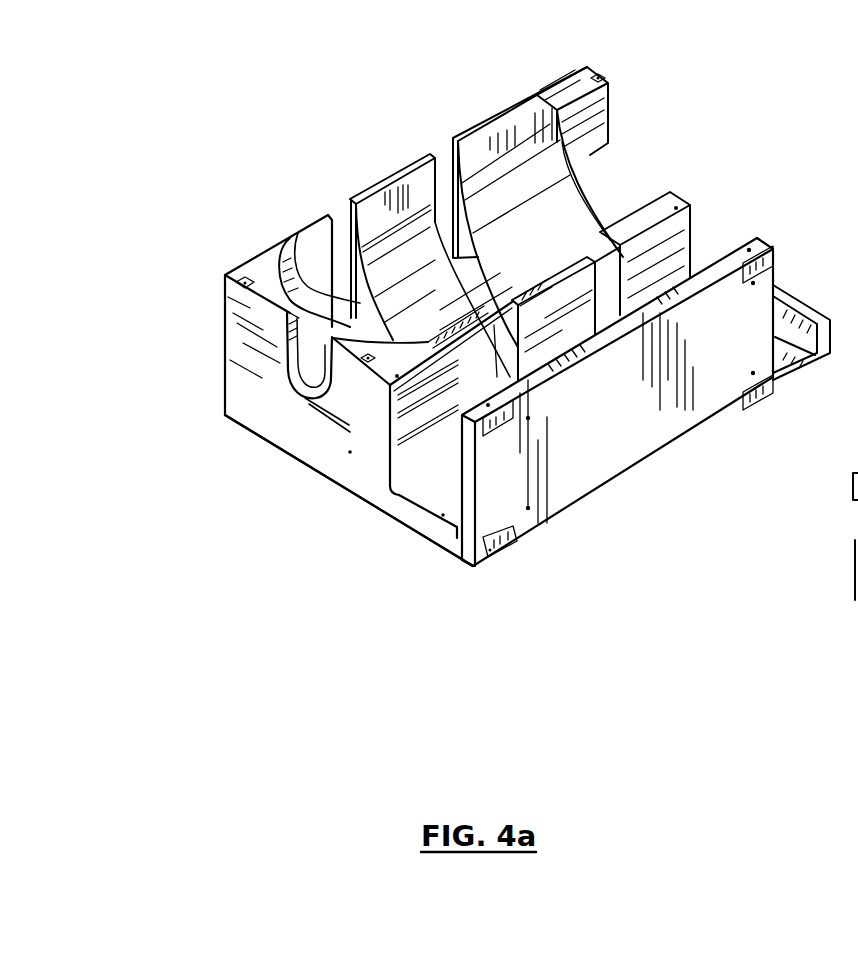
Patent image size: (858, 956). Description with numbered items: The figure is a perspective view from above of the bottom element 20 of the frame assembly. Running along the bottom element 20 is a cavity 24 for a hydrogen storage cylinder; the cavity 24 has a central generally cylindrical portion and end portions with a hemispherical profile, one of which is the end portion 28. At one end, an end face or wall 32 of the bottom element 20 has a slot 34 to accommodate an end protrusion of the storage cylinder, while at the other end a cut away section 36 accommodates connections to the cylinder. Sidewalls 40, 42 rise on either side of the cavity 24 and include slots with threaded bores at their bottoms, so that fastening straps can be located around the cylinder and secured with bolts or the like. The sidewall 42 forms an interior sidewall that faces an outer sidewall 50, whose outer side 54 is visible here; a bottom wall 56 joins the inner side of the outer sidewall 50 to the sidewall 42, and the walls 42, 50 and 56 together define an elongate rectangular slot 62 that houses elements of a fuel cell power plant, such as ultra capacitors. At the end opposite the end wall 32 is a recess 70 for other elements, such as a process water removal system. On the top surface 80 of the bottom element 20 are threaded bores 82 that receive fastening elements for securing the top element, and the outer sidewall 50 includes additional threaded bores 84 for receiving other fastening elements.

The bottom element 20 is at (486, 337).
The cavity 24 is at (418, 253).
The end portion 28 is at (327, 333).
The end face or wall 32 is at (315, 445).
The slot 34 is at (289, 380).
The cut away section 36 is at (540, 108).
The sidewall 40 is at (378, 190).
The sidewall 42 is at (693, 217).
The outer sidewall 50 is at (558, 487).
The outer side 54 is at (660, 392).
The bottom wall 56 is at (424, 521).
The elongate rectangular slot 62 is at (407, 460).
The recess 70 is at (783, 340).
The top surface 80 is at (375, 357).
The threaded bores 82 is at (538, 288).
The additional threaded bores 84 is at (765, 252).